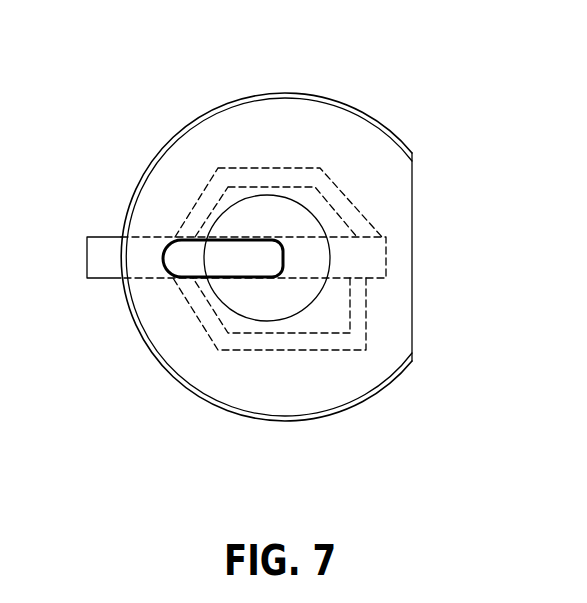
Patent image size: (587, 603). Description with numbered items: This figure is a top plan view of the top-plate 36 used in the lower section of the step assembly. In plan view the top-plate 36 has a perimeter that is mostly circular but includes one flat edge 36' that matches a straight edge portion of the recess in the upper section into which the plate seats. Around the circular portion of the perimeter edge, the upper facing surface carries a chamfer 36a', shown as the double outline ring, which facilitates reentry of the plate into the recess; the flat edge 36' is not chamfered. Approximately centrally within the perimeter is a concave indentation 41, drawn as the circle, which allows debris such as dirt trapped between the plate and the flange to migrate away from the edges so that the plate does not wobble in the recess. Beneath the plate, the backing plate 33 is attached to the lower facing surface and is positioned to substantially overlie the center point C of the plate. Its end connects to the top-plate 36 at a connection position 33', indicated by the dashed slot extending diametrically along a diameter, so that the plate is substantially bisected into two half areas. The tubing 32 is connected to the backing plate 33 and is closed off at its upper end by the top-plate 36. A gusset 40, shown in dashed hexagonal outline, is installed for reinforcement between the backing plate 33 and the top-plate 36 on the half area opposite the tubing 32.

The tubing 32 is at (262, 352).
The backing plate 33 is at (80, 231).
The connection position 33' is at (237, 183).
The top-plate 36 is at (269, 283).
The flat edge 36' is at (461, 257).
The chamfer 36a' is at (266, 236).
The gusset 40 is at (295, 168).
The concave indentation 41 is at (272, 210).
The center point C is at (267, 258).